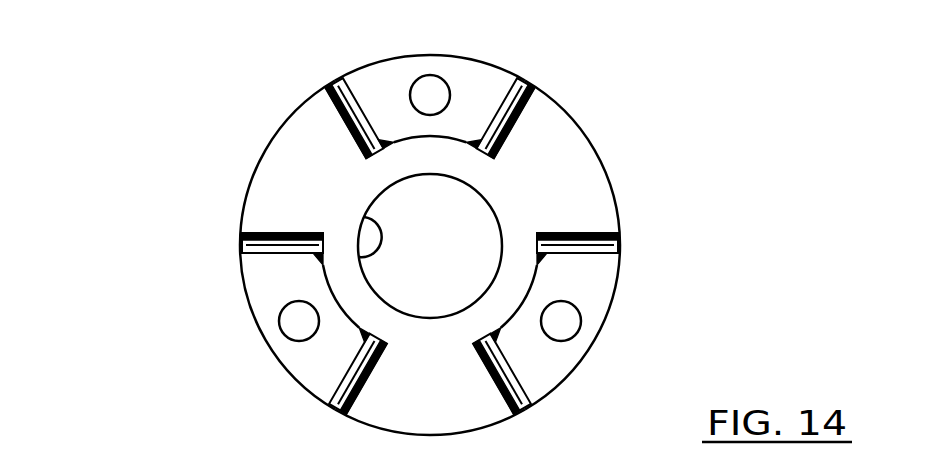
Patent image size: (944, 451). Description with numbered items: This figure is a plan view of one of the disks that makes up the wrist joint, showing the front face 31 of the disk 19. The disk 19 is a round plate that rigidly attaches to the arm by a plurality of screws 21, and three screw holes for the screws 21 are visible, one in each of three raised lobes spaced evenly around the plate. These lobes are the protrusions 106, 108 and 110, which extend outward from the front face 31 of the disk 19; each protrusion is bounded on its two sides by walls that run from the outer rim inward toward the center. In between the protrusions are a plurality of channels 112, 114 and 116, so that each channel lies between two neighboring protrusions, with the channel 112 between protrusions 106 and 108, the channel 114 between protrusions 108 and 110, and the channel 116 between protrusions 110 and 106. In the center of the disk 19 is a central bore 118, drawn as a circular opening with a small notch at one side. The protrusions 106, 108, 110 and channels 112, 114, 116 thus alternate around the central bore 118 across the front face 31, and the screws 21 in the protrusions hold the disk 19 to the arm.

The disk 19 is at (112, 176).
The screws 21 is at (430, 92).
The front face 31 is at (715, 190).
The protrusion 106 is at (373, 80).
The protrusion 108 is at (583, 272).
The protrusion 110 is at (325, 360).
The channel 112 is at (560, 140).
The channel 114 is at (457, 405).
The channel 116 is at (293, 145).
The central bore 118 is at (362, 218).